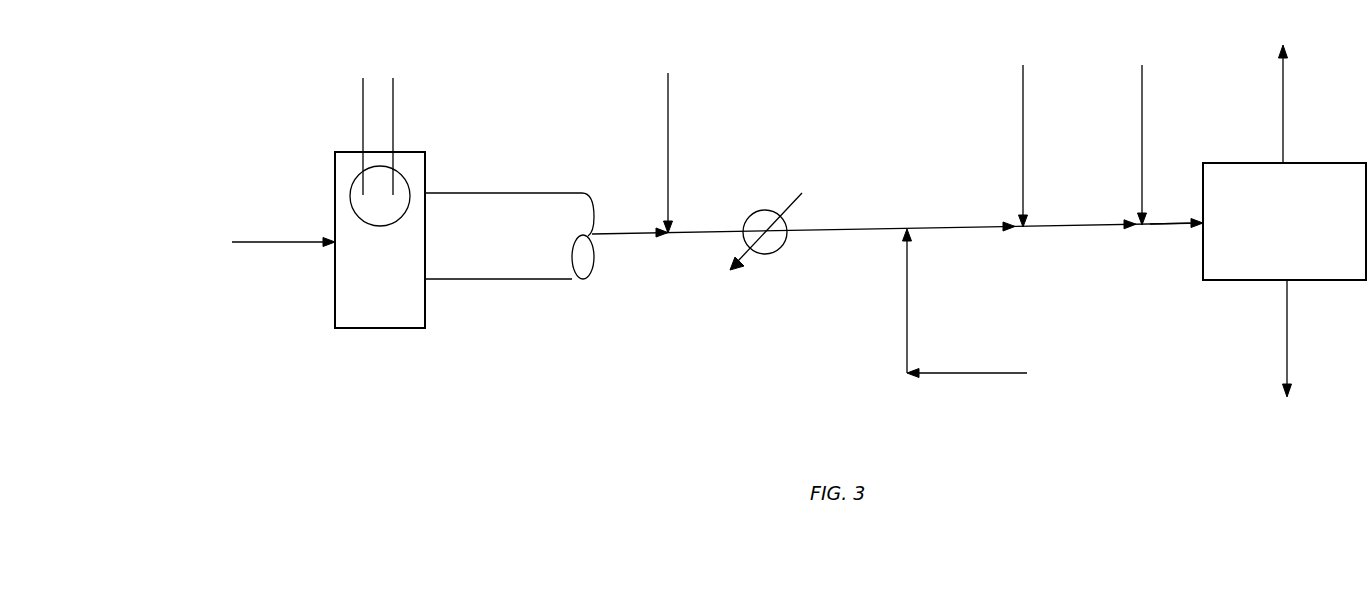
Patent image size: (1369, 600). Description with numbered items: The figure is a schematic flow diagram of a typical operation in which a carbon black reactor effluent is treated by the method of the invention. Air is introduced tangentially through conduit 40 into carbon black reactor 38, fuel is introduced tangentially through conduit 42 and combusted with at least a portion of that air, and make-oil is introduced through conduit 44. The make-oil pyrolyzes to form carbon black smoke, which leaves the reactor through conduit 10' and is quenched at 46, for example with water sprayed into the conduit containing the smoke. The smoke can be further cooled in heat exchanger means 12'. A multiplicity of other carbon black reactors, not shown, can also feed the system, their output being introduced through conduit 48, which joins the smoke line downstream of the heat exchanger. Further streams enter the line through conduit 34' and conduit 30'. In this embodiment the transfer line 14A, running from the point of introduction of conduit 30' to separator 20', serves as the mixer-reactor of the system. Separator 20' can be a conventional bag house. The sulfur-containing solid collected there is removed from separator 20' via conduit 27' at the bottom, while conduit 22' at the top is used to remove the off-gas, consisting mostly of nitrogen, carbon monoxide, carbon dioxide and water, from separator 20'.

The conduit 10' is at (897, 207).
The heat exchanger means 12' is at (766, 252).
The transfer line 14A is at (1166, 228).
The separator 20' is at (1284, 221).
The conduit 22' is at (1313, 104).
The conduit 27' is at (1317, 338).
The conduit 30' is at (1113, 145).
The conduit 34' is at (993, 146).
The carbon black reactor 38 is at (396, 291).
The conduit 40 is at (363, 116).
The conduit 42 is at (393, 116).
The conduit 44 is at (250, 243).
The quench 46 is at (668, 108).
The conduit 48 is at (988, 373).